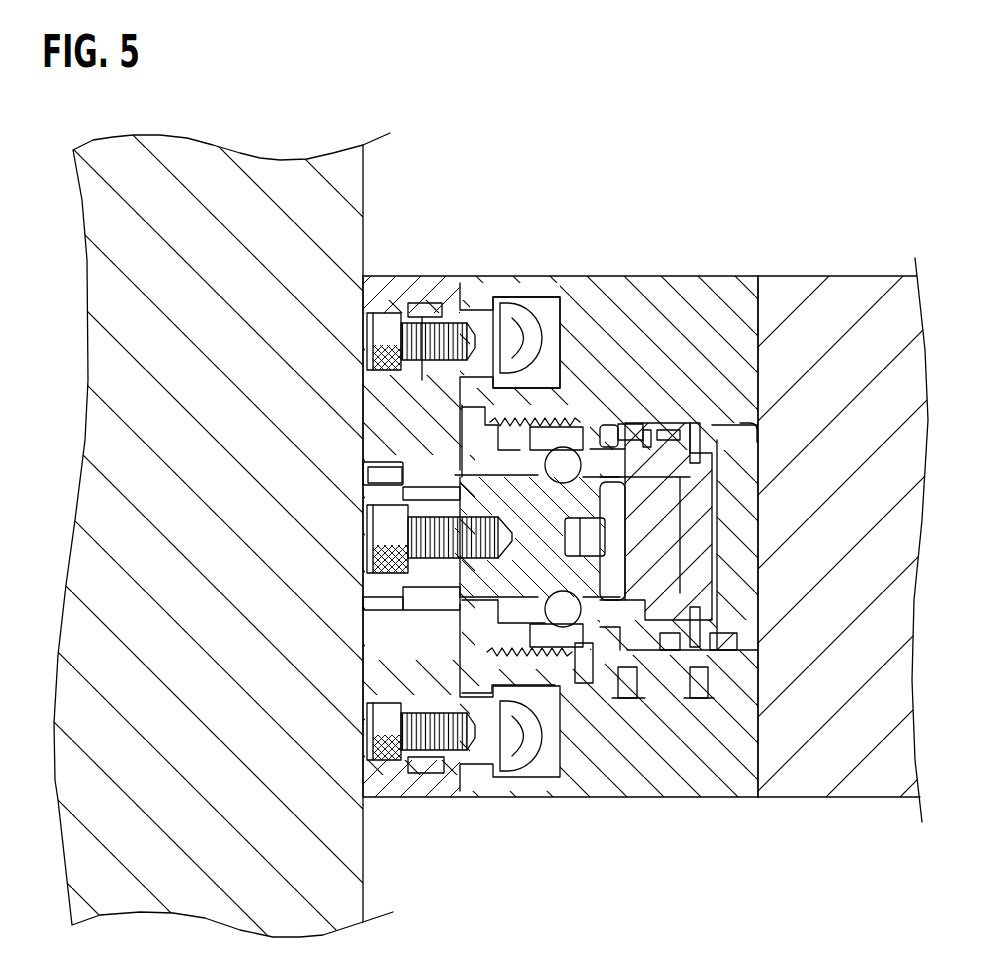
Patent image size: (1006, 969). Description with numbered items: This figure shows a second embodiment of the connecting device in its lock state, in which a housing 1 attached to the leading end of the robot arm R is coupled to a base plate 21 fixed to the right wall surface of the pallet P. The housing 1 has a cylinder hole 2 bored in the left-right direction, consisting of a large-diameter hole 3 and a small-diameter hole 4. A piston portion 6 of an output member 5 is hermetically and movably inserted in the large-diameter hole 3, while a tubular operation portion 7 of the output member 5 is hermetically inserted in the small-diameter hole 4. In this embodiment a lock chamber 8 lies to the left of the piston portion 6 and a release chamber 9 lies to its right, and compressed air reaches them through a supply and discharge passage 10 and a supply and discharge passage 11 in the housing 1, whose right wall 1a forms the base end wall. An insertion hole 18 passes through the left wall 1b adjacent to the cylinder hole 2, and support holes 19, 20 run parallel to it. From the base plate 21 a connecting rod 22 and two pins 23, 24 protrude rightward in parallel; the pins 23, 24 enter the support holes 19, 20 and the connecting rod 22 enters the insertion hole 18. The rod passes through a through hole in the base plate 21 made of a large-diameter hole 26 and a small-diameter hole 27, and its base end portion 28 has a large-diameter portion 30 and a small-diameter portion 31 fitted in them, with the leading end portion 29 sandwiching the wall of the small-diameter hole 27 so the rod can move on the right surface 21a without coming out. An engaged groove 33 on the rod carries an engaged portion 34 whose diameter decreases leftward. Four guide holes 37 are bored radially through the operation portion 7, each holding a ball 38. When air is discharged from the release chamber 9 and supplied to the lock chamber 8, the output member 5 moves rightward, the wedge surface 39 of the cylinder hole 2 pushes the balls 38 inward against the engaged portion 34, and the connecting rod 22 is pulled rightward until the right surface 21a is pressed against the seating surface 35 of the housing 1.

The housing 1 is at (697, 295).
The right wall 1a is at (752, 445).
The left wall 1b is at (462, 410).
The cylinder hole 2 is at (636, 428).
The large-diameter hole 3 is at (640, 432).
The small-diameter hole 4 is at (610, 432).
The output member 5 is at (660, 428).
The piston portion 6 is at (690, 436).
The operation portion 7 is at (528, 434).
The lock chamber 8 is at (668, 650).
The release chamber 9 is at (720, 640).
The supply and discharge passage 10 is at (702, 700).
The supply and discharge passage 11 is at (630, 700).
The insertion hole 18 is at (410, 462).
The support hole 19 is at (503, 300).
The support hole 20 is at (446, 792).
The base plate 21 is at (440, 283).
The right surface 21a is at (505, 545).
The connecting rod 22 is at (415, 588).
The pin 23 is at (540, 300).
The pin 24 is at (478, 792).
The large-diameter hole 26 is at (400, 470).
The small-diameter hole 27 is at (395, 480).
The base end portion 28 is at (405, 495).
The leading end portion 29 is at (400, 540).
The large-diameter portion 30 is at (380, 600).
The small-diameter portion 31 is at (420, 605).
The engaged groove 33 is at (470, 612).
The engaged portion 34 is at (487, 652).
The seating surface 35 is at (430, 625).
The guide hole 37 is at (605, 583).
The ball 38 is at (605, 548).
The wedge surface 39 is at (584, 684).
The pallet P is at (130, 303).
The robot arm R is at (880, 325).